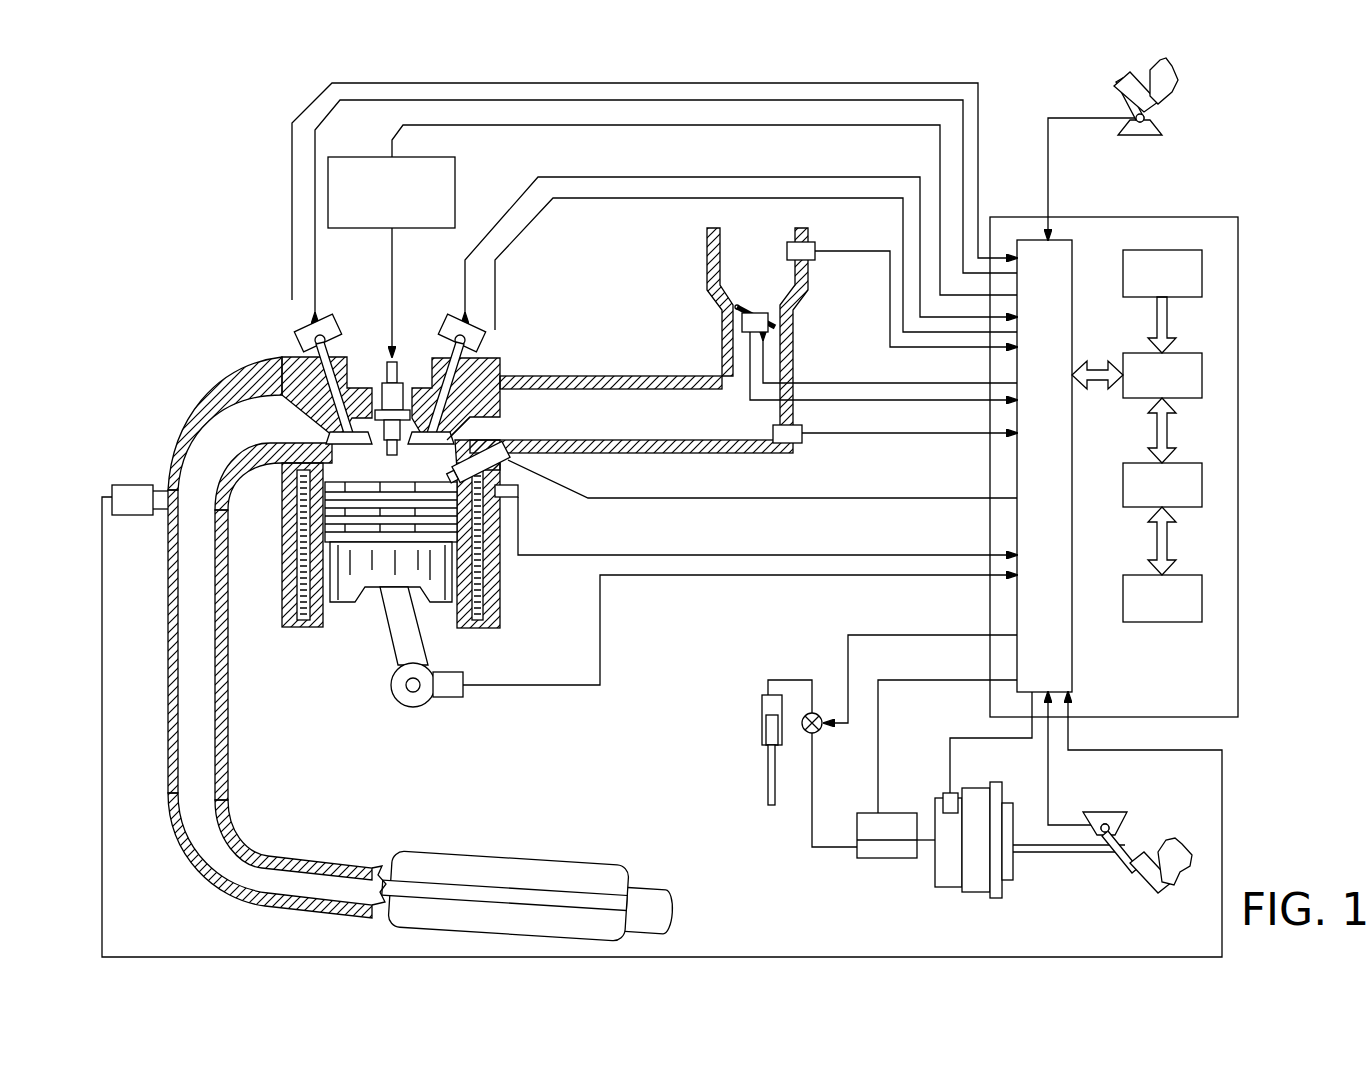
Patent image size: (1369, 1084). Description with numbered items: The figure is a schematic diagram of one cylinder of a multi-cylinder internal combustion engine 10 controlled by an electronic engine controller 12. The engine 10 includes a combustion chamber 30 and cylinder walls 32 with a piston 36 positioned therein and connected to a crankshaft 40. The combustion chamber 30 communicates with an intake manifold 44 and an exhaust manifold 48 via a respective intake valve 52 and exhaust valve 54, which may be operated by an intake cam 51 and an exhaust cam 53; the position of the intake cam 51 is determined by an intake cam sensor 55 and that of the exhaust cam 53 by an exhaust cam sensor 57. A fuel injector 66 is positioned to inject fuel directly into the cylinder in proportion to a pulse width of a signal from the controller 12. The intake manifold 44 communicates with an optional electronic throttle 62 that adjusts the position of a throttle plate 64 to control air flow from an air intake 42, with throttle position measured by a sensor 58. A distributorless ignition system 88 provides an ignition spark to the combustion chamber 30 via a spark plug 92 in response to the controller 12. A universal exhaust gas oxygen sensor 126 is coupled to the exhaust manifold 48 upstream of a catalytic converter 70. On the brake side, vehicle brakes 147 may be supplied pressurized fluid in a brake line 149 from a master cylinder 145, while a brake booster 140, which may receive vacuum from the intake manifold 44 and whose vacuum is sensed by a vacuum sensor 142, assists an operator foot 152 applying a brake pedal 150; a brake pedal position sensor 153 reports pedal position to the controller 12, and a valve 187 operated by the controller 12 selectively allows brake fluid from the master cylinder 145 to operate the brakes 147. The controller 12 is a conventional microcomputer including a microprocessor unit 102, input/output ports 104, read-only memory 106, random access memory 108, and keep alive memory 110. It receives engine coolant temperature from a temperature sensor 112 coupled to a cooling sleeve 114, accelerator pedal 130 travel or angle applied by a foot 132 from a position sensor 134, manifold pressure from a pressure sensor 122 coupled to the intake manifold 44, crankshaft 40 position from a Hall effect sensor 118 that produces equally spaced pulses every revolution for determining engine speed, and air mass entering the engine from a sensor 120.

The internal combustion engine 10 is at (205, 302).
The electronic engine controller 12 is at (1238, 220).
The combustion chamber 30 is at (387, 467).
The cylinder walls 32 is at (325, 612).
The piston 36 is at (378, 590).
The crankshaft 40 is at (398, 703).
The air intake 42 is at (740, 280).
The intake manifold 44 is at (672, 430).
The exhaust manifold 48 is at (235, 437).
The intake cam 51 is at (455, 320).
The intake valve 52 is at (437, 428).
The exhaust cam 53 is at (325, 322).
The exhaust valve 54 is at (300, 405).
The intake cam sensor 55 is at (478, 345).
The exhaust cam sensor 57 is at (305, 343).
The throttle position sensor 58 is at (745, 335).
The electronic throttle 62 is at (780, 318).
The throttle plate 64 is at (735, 310).
The fuel injector 66 is at (502, 455).
The catalytic converter 70 is at (410, 852).
The distributorless ignition system 88 is at (345, 157).
The spark plug 92 is at (398, 360).
The microprocessor unit 102 is at (1202, 372).
The input/output ports 104 is at (1073, 250).
The read-only memory 106 is at (1202, 270).
The random access memory 108 is at (1202, 482).
The keep alive memory 110 is at (1202, 594).
The temperature sensor 112 is at (520, 494).
The cooling sleeve 114 is at (487, 578).
The Hall effect sensor 118 is at (448, 700).
The air mass sensor 120 is at (810, 244).
The pressure sensor 122 is at (806, 440).
The UEGO sensor 126 is at (112, 492).
The accelerator pedal 130 is at (1120, 96).
The foot 132 is at (1175, 80).
The position sensor 134 is at (1148, 120).
The brake booster 140 is at (985, 790).
The vacuum sensor 142 is at (945, 792).
The master cylinder 145 is at (870, 813).
The vehicle brakes 147 is at (765, 697).
The brake line 149 is at (805, 678).
The brake pedal 150 is at (1130, 875).
The operator foot 152 is at (1170, 842).
The brake pedal position sensor 153 is at (1098, 826).
The valve 187 is at (820, 733).